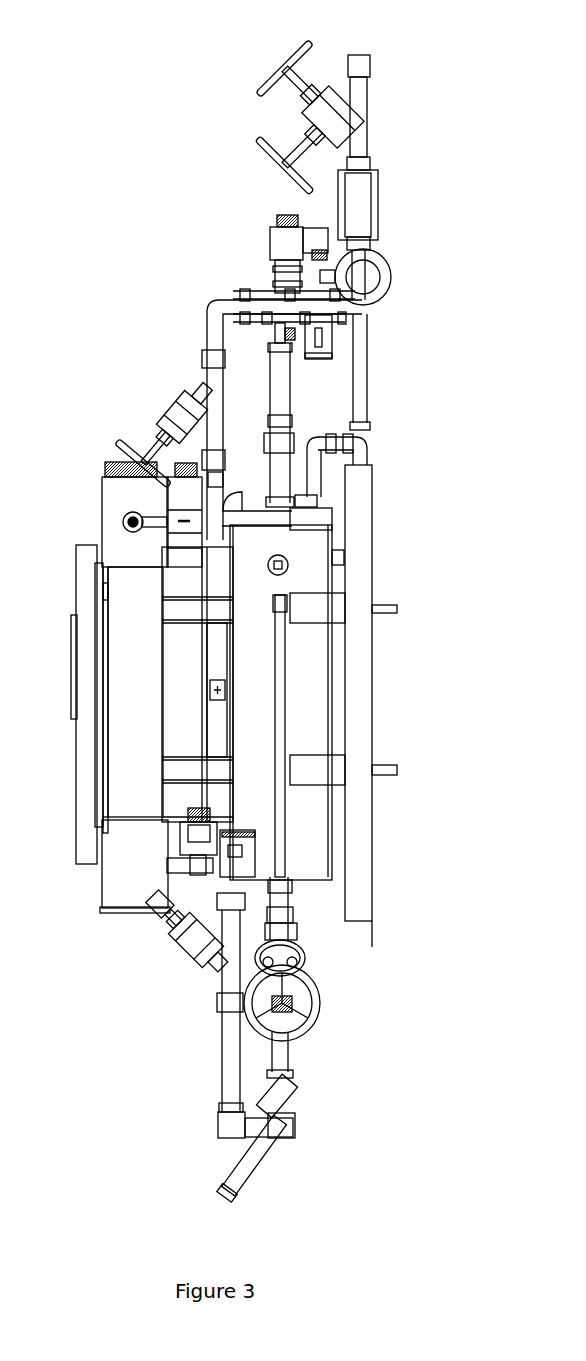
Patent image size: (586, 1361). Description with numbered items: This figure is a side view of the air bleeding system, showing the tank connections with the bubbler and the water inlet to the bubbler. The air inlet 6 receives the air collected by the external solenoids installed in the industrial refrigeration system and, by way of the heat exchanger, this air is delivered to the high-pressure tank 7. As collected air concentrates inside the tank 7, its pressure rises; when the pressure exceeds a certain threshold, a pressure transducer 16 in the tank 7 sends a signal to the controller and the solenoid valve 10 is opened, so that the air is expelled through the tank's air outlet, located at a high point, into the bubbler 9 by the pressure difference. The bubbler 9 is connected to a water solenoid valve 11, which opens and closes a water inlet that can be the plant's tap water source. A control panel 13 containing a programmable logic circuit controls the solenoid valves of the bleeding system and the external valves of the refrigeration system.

The air inlet 6 is at (357, 83).
The high-pressure tank 7 is at (297, 692).
The bubbler 9 is at (121, 853).
The solenoid valve 10 is at (208, 846).
The water solenoid valve 11 is at (188, 497).
The control panel 13 is at (89, 591).
The pressure transducer 16 is at (290, 562).